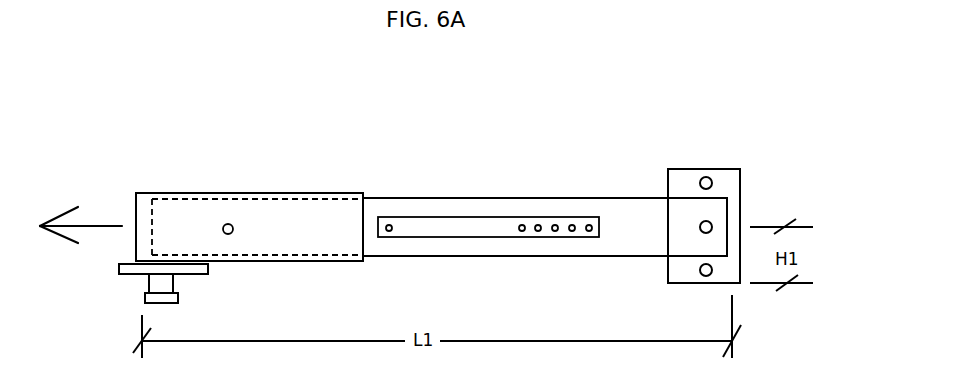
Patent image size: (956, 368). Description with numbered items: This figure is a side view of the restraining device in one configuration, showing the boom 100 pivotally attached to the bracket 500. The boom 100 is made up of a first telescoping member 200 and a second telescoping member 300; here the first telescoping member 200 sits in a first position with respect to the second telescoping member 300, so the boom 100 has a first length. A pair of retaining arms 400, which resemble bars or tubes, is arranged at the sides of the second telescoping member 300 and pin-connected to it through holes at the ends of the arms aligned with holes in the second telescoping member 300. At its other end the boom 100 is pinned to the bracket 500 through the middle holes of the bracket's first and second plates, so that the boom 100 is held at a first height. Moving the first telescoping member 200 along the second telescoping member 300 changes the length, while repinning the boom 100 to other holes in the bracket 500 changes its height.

The boom 100 is at (348, 121).
The first telescoping member 200 is at (253, 193).
The second telescoping member 300 is at (547, 198).
The retaining arms 400 is at (415, 225).
The bracket 500 is at (722, 168).